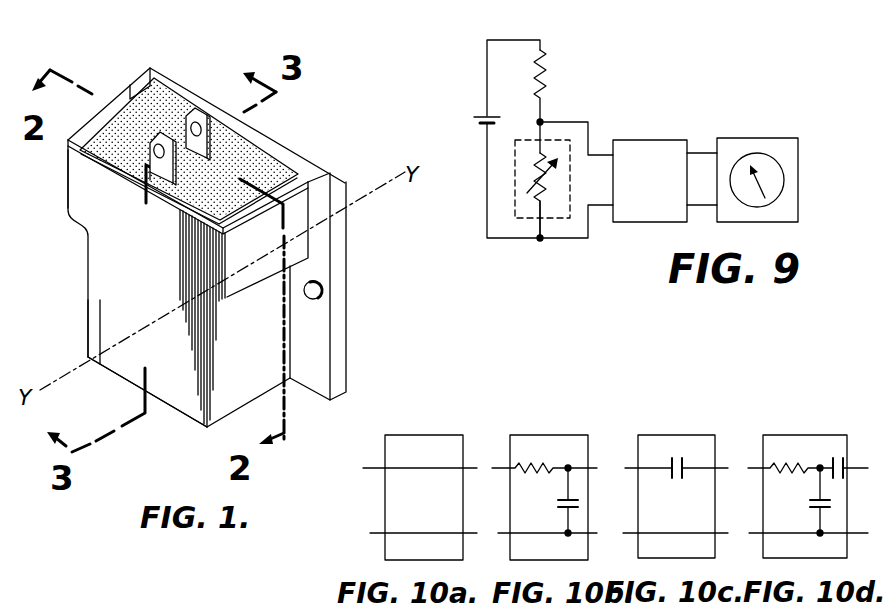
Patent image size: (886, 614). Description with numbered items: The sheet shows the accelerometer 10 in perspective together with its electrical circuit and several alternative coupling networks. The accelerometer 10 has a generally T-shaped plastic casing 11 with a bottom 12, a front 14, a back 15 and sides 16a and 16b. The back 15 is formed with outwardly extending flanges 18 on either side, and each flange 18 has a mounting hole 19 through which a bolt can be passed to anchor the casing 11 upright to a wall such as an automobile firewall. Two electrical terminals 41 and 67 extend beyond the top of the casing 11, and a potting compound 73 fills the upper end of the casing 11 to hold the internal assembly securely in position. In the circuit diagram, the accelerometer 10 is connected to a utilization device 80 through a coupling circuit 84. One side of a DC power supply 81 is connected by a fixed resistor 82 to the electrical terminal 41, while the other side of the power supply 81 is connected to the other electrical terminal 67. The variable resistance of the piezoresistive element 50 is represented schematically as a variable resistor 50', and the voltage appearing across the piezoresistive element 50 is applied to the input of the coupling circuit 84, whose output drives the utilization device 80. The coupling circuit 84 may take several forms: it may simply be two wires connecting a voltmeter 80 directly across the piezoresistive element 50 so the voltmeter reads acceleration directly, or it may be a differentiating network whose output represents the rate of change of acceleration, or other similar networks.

In FIG. 1, the accelerometer 10 is at (75, 329).
In FIG. 1, the casing 11 is at (87, 248).
In FIG. 1, the bottom 12 is at (176, 414).
In FIG. 1, the front 14 is at (132, 364).
In FIG. 1, the back 15 is at (268, 140).
In FIG. 1, the side 16a is at (88, 293).
In FIG. 1, the side 16b is at (233, 398).
In FIG. 1, the flange 18 is at (133, 86).
In FIG. 1, the mounting hole 19 is at (322, 295).
In FIG. 1, the electrical terminal 41 is at (191, 114).
In FIG. 1, the electrical terminal 67 is at (152, 180).
In FIG. 9, the electrical terminal 67 is at (540, 243).
In FIG. 1, the potting compound 73 is at (280, 168).
In FIG. 9, the piezoresistive element 50 is at (564, 214).
In FIG. 9, the variable resistor 50' is at (508, 222).
In FIG. 9, the utilization device 80 is at (743, 138).
In FIG. 9, the power supply 81 is at (483, 115).
In FIG. 9, the fixed resistor 82 is at (546, 88).
In FIG. 9, the coupling circuit 84 is at (640, 140).
In FIG. 10A, the coupling circuit 84 is at (452, 435).
In FIG. 10B, the coupling circuit 84 is at (557, 435).
In FIG. 10C, the coupling circuit 84 is at (678, 435).
In FIG. 10D, the coupling circuit 84 is at (797, 435).